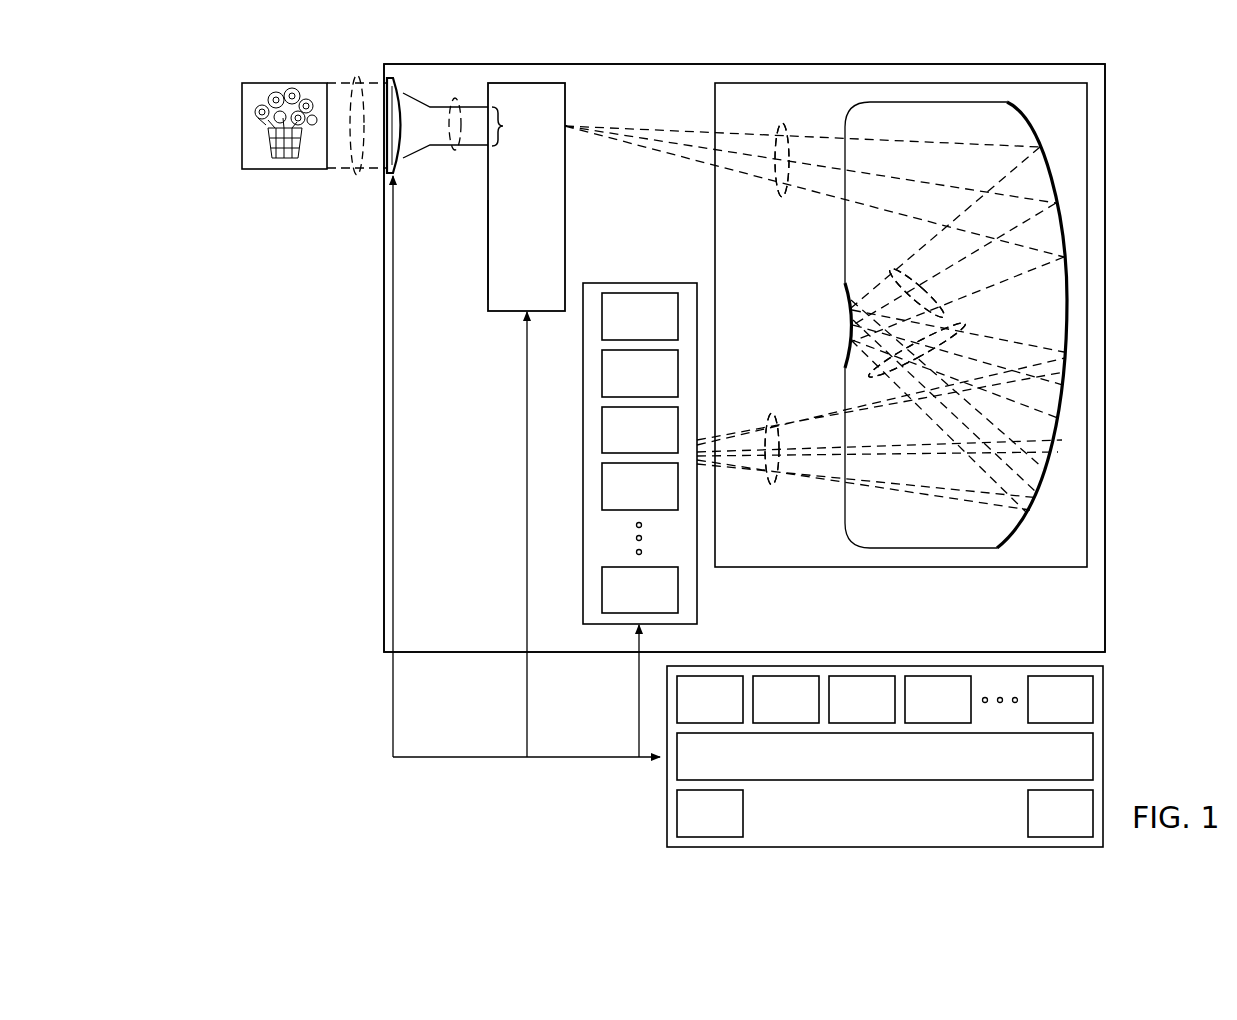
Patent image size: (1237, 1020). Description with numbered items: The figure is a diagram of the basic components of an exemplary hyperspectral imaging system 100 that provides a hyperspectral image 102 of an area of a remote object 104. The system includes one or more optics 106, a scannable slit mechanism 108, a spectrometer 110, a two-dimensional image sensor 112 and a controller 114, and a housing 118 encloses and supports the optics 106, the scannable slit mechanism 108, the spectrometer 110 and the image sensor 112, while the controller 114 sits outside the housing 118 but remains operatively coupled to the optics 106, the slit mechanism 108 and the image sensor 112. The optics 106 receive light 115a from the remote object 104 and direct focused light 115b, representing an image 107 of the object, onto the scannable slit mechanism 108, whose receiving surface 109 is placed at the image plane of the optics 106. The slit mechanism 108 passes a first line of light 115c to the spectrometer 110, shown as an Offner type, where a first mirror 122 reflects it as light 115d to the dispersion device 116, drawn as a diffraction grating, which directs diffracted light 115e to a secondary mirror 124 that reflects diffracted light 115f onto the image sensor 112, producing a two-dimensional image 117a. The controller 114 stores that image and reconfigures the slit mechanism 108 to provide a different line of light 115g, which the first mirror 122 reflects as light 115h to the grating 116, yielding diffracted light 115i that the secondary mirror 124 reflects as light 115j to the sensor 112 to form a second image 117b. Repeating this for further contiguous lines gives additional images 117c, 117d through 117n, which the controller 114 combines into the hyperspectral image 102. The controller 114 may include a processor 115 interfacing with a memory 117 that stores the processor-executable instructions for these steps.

The hyperspectral imaging system 100 is at (300, 603).
The hyperspectral image 102 is at (903, 768).
The remote object 104 is at (242, 124).
The optic(s) 106 is at (403, 99).
The image 107 is at (474, 125).
The scannable slit mechanism 108 is at (545, 207).
The surface 109 is at (488, 245).
The spectrometer 110 is at (902, 570).
The two-dimensional image sensor 112 is at (628, 280).
The controller 114 is at (903, 821).
The processor 115 is at (728, 824).
The light 115a is at (356, 176).
The focused light 115b is at (454, 152).
The first line of light 115c is at (782, 198).
The first line of light (reflected) 115d is at (886, 266).
The diffracted light 115e is at (873, 372).
The diffracted light (reflected) 115f is at (773, 486).
The different line of light 115g is at (782, 160).
The different line of light (reflected) 115h is at (916, 293).
The diffracted light 115i is at (916, 349).
The diffracted light (reflected) 115j is at (772, 449).
The dispersion device 116 is at (846, 322).
The memory 117 is at (1078, 824).
The two-dimensional image 117a is at (665, 327).
The two-dimensional image 117b is at (665, 384).
The two-dimensional image 117c is at (665, 441).
The two-dimensional image 117d is at (665, 497).
The two-dimensional image 117n is at (665, 601).
The housing 118 is at (376, 414).
The first mirror 122 is at (1052, 172).
The secondary mirror 124 is at (1050, 470).